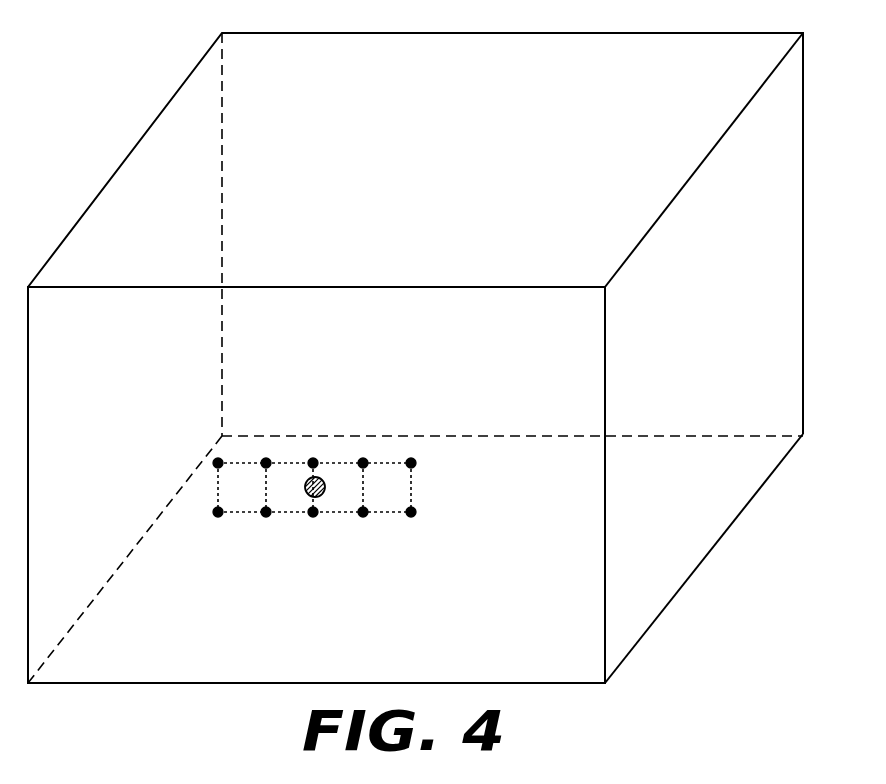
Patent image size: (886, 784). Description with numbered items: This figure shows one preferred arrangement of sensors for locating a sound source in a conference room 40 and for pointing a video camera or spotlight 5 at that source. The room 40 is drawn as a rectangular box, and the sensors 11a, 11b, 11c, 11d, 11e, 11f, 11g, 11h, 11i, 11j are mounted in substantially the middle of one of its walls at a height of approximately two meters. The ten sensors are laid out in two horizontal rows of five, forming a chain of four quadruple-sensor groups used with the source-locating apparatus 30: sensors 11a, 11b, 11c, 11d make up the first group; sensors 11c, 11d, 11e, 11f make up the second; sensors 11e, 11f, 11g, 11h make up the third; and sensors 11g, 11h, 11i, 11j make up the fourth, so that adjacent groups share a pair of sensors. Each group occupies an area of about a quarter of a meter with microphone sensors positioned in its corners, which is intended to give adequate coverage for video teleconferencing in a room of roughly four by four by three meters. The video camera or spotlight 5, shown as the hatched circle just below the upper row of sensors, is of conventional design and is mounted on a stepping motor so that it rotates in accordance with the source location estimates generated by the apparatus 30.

The conference room 40 is at (151, 128).
The video camera or spotlight 5 is at (322, 478).
The apparatus 30 is at (390, 524).
The sensor 11a is at (217, 517).
The sensor 11b is at (215, 460).
The sensor 11c is at (265, 517).
The sensor 11d is at (265, 458).
The sensor 11e is at (312, 517).
The sensor 11f is at (312, 458).
The sensor 11g is at (363, 517).
The sensor 11h is at (365, 458).
The sensor 11i is at (411, 517).
The sensor 11j is at (416, 463).